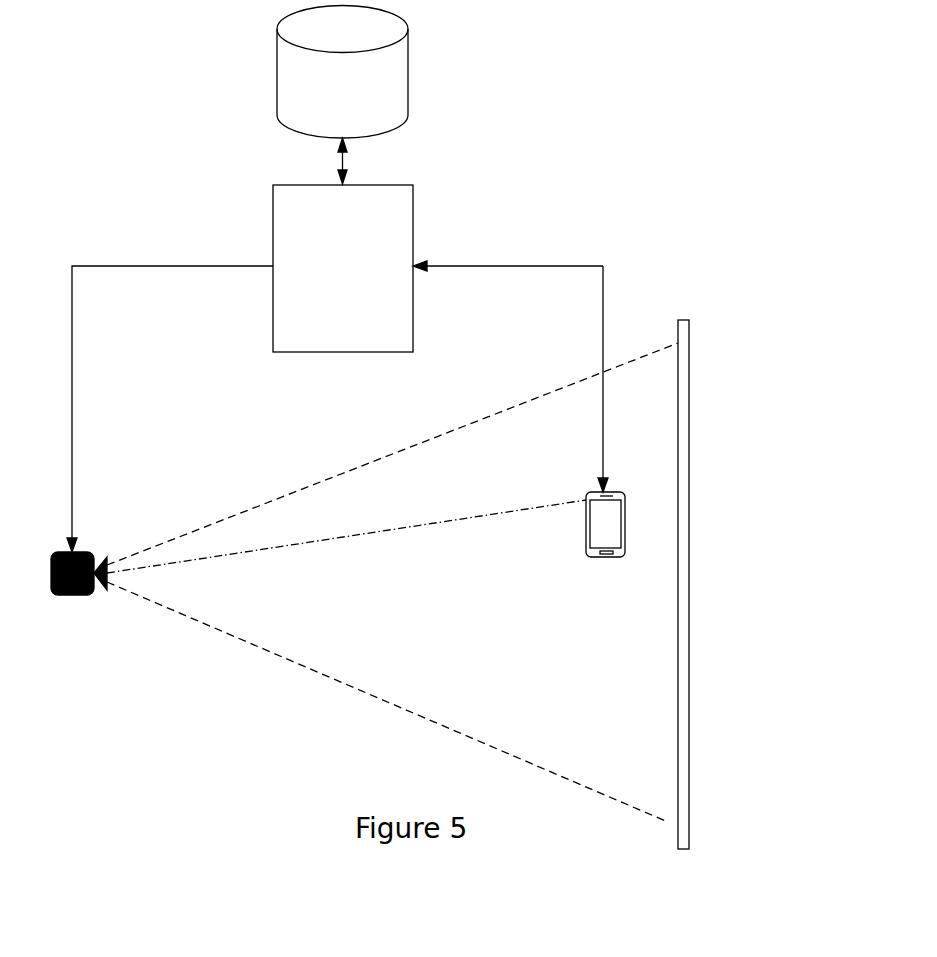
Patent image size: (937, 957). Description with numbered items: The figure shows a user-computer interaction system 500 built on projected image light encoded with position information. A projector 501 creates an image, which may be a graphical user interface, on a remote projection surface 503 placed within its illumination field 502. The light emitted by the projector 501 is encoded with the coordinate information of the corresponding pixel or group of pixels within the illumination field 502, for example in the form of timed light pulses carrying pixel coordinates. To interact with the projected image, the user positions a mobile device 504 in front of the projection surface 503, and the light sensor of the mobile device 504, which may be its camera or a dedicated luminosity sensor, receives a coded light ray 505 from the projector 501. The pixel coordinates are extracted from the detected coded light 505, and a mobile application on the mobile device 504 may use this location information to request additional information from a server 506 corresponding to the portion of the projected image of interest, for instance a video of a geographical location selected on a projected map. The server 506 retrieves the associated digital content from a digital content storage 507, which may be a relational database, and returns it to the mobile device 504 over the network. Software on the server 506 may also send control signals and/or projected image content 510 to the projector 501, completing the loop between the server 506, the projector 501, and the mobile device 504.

The user-computer interaction system 500 is at (585, 176).
The projector 501 is at (72, 595).
The illumination field 502 is at (472, 420).
The projection surface 503 is at (689, 573).
The mobile device 504 is at (598, 557).
The coded light ray 505 is at (510, 512).
The server 506 is at (283, 352).
The digital content storage 507 is at (277, 80).
The control signals and/or projected image content 510 is at (72, 380).